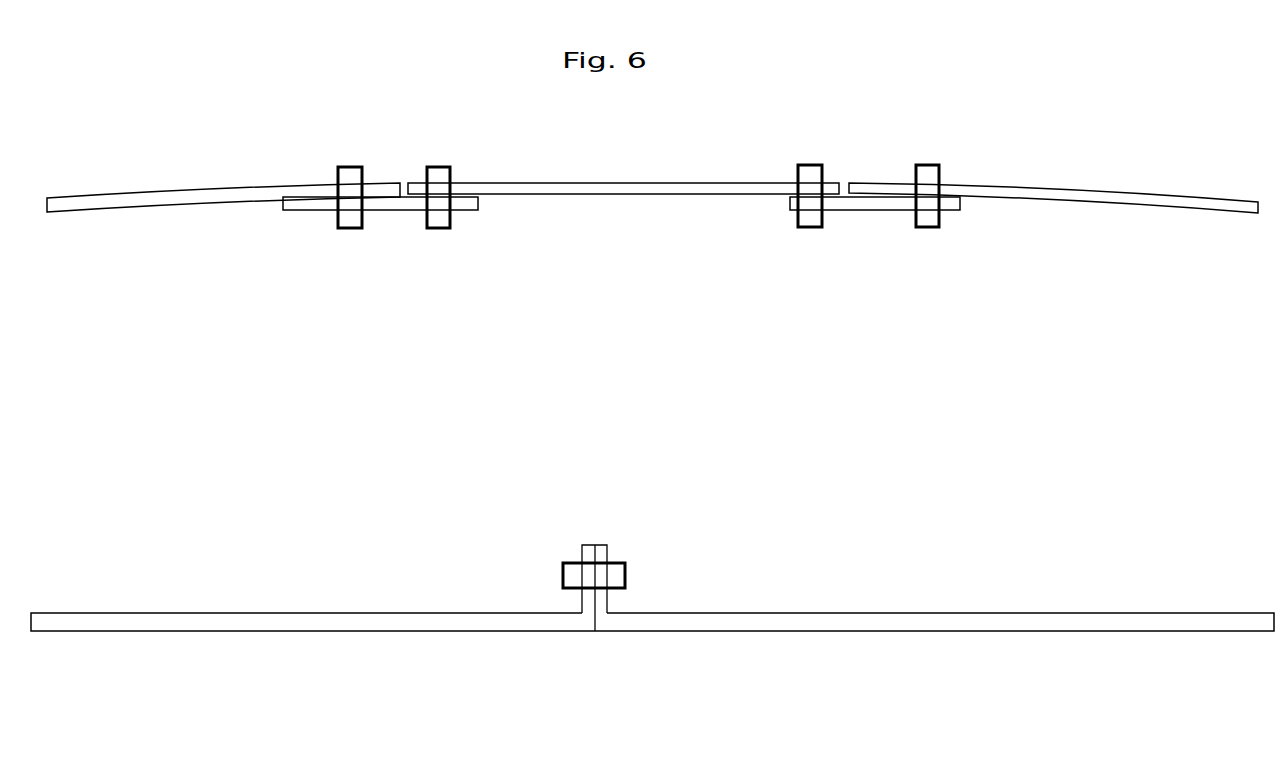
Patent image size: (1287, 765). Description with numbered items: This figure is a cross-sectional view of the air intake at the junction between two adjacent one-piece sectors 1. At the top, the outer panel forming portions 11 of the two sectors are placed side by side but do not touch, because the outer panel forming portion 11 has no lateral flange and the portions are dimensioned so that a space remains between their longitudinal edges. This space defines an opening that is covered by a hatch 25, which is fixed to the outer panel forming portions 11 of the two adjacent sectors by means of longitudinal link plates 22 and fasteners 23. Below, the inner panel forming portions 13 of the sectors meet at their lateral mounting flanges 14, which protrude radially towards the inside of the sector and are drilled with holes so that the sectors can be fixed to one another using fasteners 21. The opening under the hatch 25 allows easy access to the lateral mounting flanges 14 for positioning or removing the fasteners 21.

The one-piece sector 1 is at (146, 160).
The outer panel forming portion 11 is at (227, 192).
The inner panel forming portion 13 is at (417, 622).
The lateral mounting flange 14 is at (581, 556).
The fasteners 21 is at (614, 562).
The longitudinal link plates 22 is at (392, 211).
The fasteners 23 is at (357, 166).
The hatch 25 is at (713, 183).